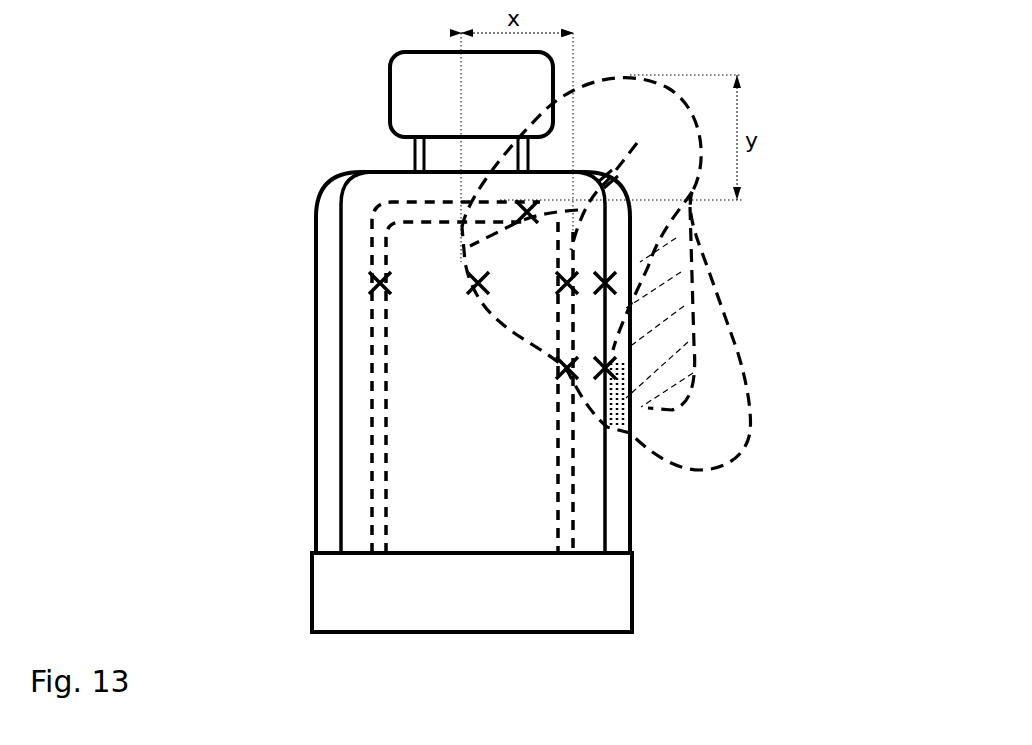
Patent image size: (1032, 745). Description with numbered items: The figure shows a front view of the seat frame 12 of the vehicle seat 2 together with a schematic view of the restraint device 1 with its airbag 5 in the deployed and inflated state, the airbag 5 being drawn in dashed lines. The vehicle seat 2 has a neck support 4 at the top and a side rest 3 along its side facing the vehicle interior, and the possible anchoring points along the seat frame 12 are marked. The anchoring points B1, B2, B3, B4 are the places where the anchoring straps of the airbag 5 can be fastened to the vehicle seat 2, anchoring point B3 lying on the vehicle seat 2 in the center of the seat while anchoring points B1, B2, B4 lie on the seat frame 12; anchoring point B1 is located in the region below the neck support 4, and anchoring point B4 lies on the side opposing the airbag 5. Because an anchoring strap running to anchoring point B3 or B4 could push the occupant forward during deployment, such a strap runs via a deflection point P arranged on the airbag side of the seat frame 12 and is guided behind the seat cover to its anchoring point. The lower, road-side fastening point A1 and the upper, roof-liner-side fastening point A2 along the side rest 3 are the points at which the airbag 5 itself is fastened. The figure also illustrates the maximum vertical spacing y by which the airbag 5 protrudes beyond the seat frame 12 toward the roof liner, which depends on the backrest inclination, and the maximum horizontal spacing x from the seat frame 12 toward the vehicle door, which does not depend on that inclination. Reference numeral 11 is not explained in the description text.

The restraint device 1 is at (855, 95).
The vehicle seat 2 is at (467, 371).
The side rest 3 is at (328, 537).
The neck support 4 is at (502, 107).
The airbag 5 is at (848, 199).
The sensor region 11 is at (622, 422).
The seat frame 12 is at (375, 458).
The anchoring point B1 is at (527, 212).
The anchoring point B2 is at (567, 369).
The anchoring point B3 is at (478, 285).
The anchoring point B4 is at (380, 285).
The deflection point P is at (567, 286).
The fastening point A1 is at (608, 368).
The fastening point A2 is at (607, 284).